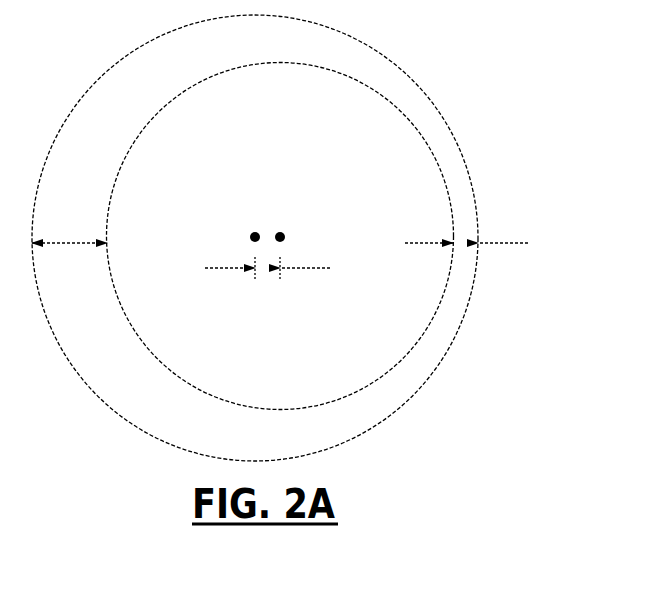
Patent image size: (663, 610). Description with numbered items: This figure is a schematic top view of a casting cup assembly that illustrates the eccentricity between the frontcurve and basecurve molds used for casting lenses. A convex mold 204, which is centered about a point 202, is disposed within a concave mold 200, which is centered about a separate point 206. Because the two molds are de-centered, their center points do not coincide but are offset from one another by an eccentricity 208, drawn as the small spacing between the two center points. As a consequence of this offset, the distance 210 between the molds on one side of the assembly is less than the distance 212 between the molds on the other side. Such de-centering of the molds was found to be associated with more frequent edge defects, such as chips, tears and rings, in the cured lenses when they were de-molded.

The concave mold 200 is at (418, 82).
The center point of convex mold 202 is at (285, 230).
The convex mold 204 is at (323, 65).
The center point of concave mold 206 is at (249, 232).
The eccentricity 208 is at (268, 280).
The distance on one side of the mold 210 is at (467, 245).
The distance on the other side of the mold 212 is at (69, 232).